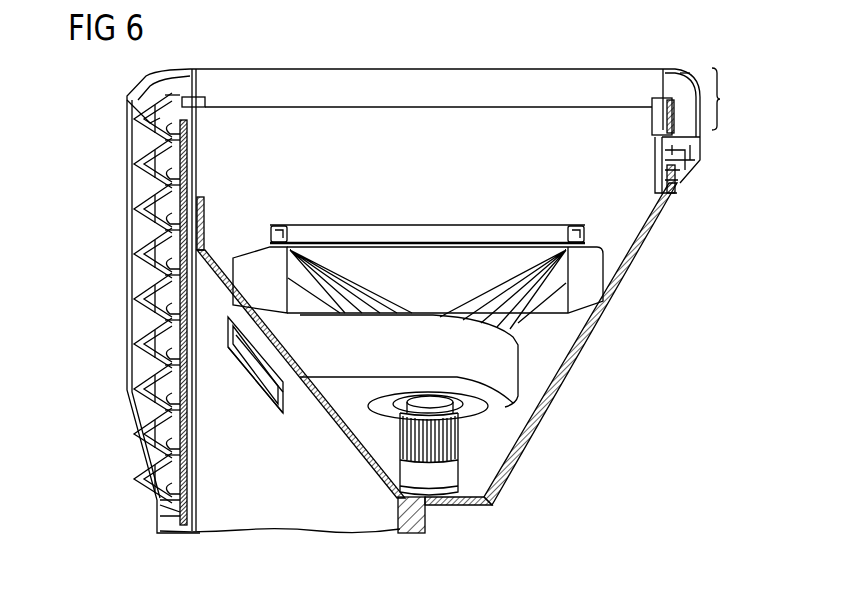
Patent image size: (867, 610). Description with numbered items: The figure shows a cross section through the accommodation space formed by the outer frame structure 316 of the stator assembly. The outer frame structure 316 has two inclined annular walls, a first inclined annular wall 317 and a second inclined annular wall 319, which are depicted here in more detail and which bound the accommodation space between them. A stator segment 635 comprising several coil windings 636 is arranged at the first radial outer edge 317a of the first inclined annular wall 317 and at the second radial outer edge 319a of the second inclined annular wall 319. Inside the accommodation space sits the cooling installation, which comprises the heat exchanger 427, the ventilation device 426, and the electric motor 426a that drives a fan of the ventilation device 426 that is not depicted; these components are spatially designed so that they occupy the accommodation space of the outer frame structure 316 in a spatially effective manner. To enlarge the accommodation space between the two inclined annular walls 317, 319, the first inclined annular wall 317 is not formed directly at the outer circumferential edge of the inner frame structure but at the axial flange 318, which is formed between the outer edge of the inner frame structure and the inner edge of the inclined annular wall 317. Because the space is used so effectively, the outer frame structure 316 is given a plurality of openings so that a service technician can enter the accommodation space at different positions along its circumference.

The outer frame structure 316 is at (672, 322).
The first inclined annular wall 317 is at (573, 373).
The first radial outer edge 317a is at (680, 184).
The axial flange 318 is at (477, 507).
The second inclined annular wall 319 is at (318, 528).
The second radial outer edge 319a is at (204, 203).
The ventilation device 426 is at (431, 318).
The electric motor 426a is at (447, 442).
The heat exchanger 427 is at (517, 225).
The stator segment 635 is at (708, 102).
The coil windings 636 is at (168, 92).